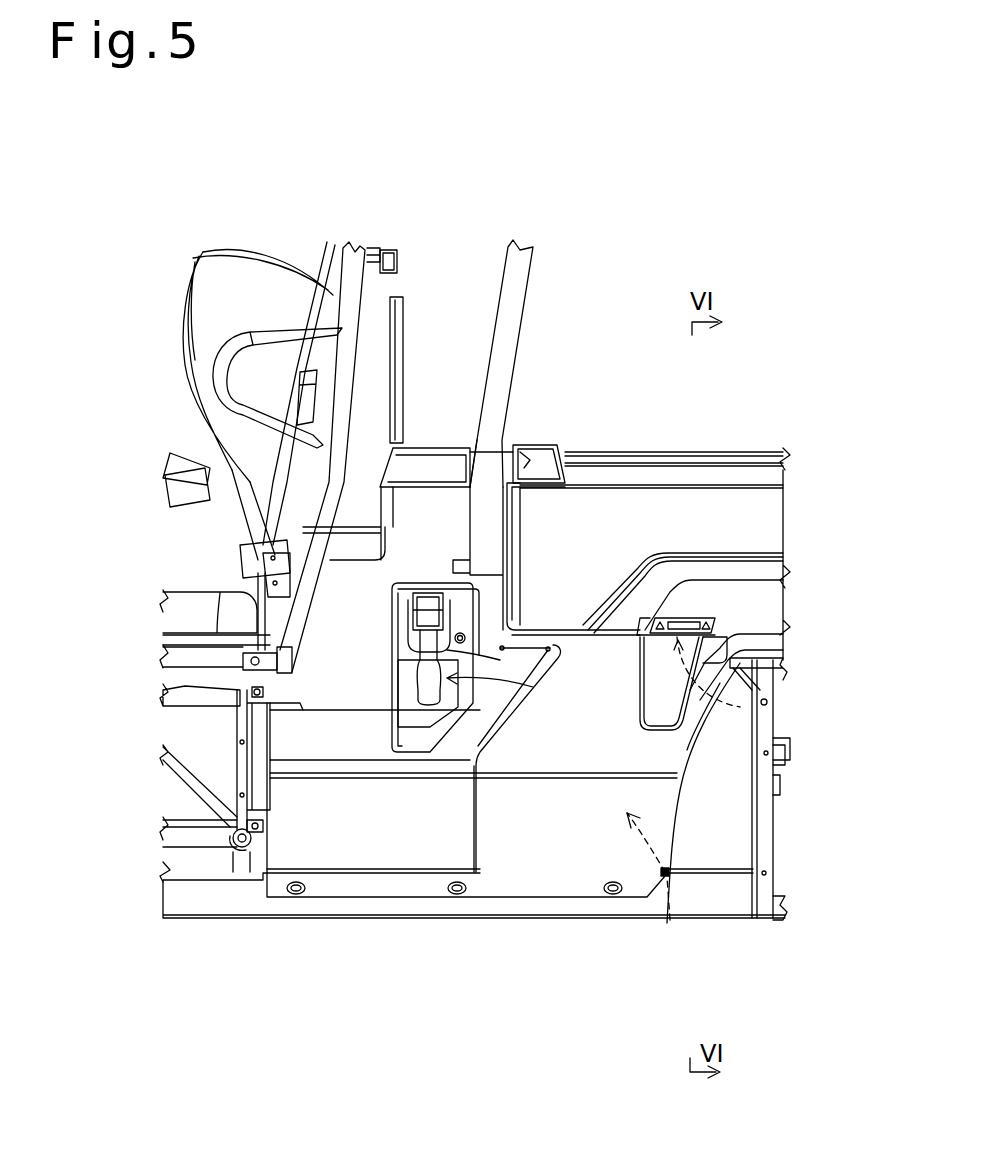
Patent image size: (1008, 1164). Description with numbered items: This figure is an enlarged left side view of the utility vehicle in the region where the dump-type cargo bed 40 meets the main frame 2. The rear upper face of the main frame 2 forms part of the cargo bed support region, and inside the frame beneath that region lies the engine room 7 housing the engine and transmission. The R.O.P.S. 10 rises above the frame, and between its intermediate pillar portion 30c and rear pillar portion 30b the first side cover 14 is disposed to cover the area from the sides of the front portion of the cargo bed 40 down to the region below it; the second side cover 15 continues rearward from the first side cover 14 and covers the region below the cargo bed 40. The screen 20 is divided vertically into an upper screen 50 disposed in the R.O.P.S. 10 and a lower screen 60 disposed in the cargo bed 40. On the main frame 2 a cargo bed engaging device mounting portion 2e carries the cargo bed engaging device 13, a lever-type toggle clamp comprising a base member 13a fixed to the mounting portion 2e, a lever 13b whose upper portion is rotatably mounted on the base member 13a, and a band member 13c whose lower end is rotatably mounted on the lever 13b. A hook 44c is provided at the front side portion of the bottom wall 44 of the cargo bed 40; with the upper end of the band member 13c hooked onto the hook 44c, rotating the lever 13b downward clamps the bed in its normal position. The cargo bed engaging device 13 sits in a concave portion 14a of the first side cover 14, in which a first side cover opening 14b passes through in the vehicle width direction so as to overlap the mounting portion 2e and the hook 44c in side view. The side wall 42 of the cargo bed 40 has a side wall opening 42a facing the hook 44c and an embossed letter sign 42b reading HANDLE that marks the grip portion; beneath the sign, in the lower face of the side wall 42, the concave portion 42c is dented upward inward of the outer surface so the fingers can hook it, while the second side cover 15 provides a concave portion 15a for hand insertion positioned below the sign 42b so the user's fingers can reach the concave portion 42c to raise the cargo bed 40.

The main frame 2 is at (751, 942).
The cargo bed engaging device mounting portion 2e is at (477, 440).
The engine room 7 is at (670, 920).
The R.O.P.S. 10 is at (552, 240).
The cargo bed engaging device 13 is at (247, 964).
The base member 13a is at (423, 625).
The lever 13b is at (430, 688).
The band member 13c is at (417, 603).
The first side cover 14 is at (340, 593).
The concave portion for cargo bed engaging device disposition use 14a is at (590, 447).
The first side cover opening 14b is at (520, 445).
The second side cover 15 is at (540, 828).
The concave portion for hand insertion use 15a is at (645, 699).
The screen 20 is at (420, 162).
The rear pillar portion 30b is at (500, 263).
The intermediate pillar portion 30c is at (355, 258).
The cargo bed 40 is at (795, 483).
The side wall 42 is at (740, 535).
The side wall opening 42a is at (418, 593).
The embossed letter sign 42b is at (681, 605).
The concave portion for cargo bed raising use 42c is at (740, 707).
The bottom wall 44 is at (380, 627).
The hook 44c is at (380, 597).
The upper screen 50 is at (357, 267).
The lower screen 60 is at (403, 303).